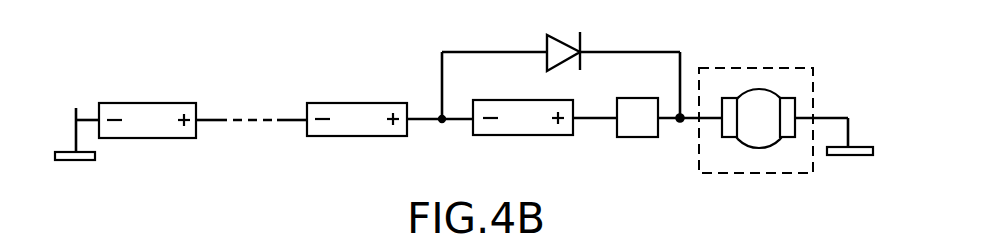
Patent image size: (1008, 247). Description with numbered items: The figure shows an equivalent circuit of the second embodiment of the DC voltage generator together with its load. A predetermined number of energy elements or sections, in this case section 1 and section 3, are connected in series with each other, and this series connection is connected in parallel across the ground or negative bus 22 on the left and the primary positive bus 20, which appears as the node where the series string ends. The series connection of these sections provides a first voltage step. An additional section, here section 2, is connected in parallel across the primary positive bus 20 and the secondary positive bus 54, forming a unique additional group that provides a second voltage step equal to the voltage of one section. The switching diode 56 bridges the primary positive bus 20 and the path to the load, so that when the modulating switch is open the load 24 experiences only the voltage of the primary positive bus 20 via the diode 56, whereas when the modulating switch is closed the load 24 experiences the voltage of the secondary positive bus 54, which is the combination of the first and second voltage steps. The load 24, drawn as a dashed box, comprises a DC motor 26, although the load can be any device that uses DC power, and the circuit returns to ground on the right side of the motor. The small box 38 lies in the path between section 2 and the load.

The energy element or section 1 is at (147, 138).
The energy element or section 2 is at (513, 100).
The energy element or section 3 is at (357, 136).
The primary positive bus 20 is at (436, 122).
The ground or negative bus 22 is at (76, 110).
The load 24 is at (817, 65).
The DC motor 26 is at (725, 129).
The switch component 38 is at (640, 137).
The secondary positive bus 54 is at (593, 117).
The switching diode 56 is at (557, 34).